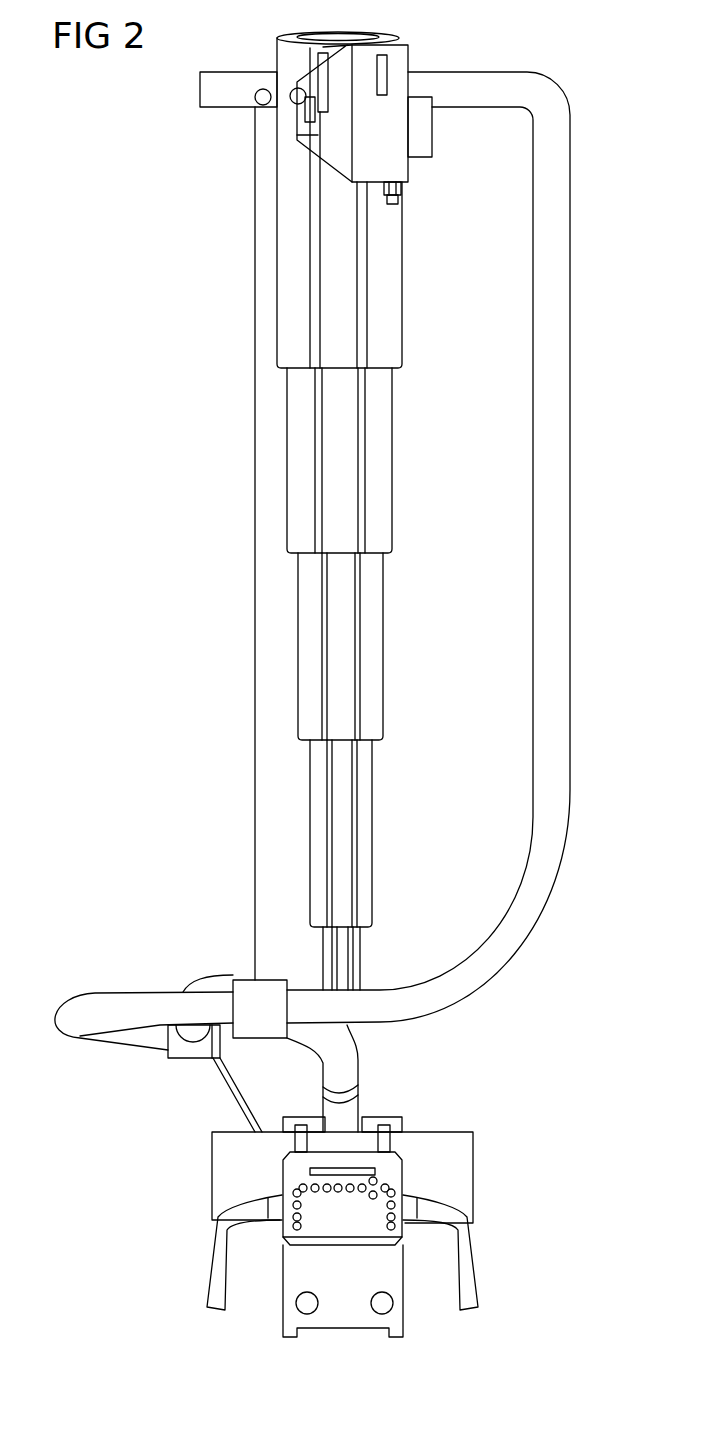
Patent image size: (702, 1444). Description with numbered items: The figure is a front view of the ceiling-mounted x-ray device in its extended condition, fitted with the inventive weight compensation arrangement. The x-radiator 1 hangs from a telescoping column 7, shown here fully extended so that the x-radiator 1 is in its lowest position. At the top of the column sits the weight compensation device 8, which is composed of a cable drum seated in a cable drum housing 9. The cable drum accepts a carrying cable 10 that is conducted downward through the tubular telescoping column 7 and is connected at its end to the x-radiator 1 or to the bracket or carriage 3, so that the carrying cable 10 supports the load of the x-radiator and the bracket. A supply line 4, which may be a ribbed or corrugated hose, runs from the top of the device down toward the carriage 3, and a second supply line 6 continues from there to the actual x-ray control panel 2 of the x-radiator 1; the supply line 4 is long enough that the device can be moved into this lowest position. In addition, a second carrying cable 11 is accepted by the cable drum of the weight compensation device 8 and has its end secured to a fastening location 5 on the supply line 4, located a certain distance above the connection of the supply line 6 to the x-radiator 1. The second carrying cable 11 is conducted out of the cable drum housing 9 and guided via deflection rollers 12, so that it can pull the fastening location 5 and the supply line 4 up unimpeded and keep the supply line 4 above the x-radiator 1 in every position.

The x-radiator 1 is at (230, 1158).
The x-ray control panel 2 is at (348, 1222).
The bracket or carriage 3 is at (374, 1121).
The supply line 4 is at (535, 372).
The fastening location 5 is at (264, 1000).
The second supply line 6 is at (330, 1113).
The telescoping column 7 is at (388, 258).
The weight compensation device 8 is at (418, 62).
The cable drum housing 9 is at (400, 124).
The carrying cable 10 is at (323, 47).
The second carrying cable 11 is at (255, 350).
The deflection rollers 12 is at (298, 97).